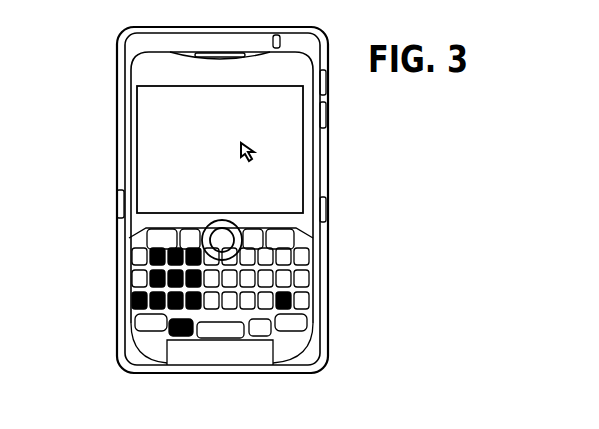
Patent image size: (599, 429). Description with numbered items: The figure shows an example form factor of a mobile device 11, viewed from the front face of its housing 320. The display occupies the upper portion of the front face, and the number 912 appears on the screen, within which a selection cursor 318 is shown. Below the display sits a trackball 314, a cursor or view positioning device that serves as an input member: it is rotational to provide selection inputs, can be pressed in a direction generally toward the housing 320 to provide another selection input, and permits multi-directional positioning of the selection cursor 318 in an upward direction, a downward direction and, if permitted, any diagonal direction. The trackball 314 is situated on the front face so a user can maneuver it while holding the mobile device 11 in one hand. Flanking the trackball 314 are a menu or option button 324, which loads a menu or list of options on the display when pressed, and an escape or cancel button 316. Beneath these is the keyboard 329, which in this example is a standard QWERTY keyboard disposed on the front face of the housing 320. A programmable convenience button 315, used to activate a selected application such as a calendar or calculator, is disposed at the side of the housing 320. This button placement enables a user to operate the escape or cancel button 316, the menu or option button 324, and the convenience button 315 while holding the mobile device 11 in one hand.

The mobile device 11 is at (247, 27).
The display screen 912 is at (198, 120).
The trackball 314 is at (232, 217).
The programmable convenience button 315 is at (117, 197).
The escape or cancel button 316 is at (268, 221).
The selection cursor 318 is at (266, 138).
The housing 320 is at (142, 348).
The menu or option button 324 is at (189, 223).
The keyboard 329 is at (125, 319).